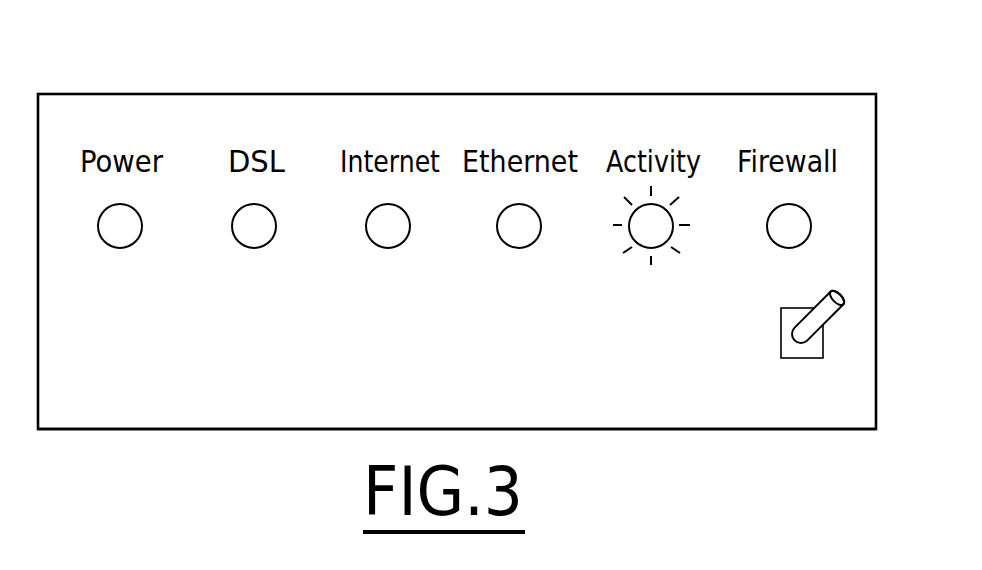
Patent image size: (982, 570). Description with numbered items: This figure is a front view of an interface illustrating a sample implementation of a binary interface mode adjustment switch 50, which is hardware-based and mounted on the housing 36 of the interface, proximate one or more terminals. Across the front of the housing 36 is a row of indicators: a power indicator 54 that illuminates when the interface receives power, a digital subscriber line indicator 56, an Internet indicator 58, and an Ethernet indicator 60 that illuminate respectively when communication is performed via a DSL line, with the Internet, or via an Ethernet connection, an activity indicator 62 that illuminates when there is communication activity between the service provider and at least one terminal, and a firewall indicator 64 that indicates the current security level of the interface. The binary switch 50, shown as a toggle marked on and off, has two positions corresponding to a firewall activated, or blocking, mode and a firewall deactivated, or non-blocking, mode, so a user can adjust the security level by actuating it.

The housing 36 is at (267, 417).
The binary interface mode adjustment switch 50 is at (850, 299).
The power indicator 54 is at (123, 249).
The digital subscriber line indicator 56 is at (257, 249).
The Internet indicator 58 is at (390, 249).
The Ethernet indicator 60 is at (518, 249).
The activity indicator 62 is at (643, 250).
The firewall indicator 64 is at (768, 240).